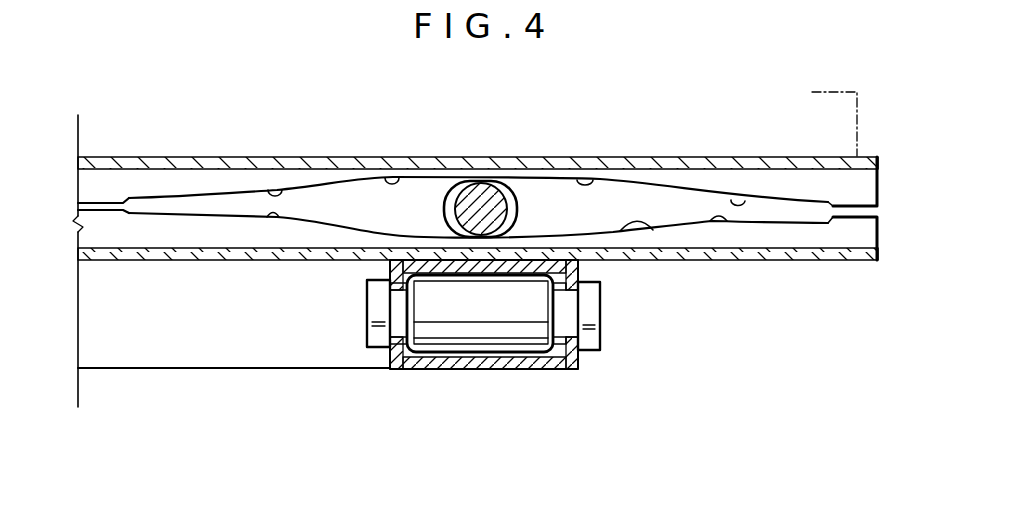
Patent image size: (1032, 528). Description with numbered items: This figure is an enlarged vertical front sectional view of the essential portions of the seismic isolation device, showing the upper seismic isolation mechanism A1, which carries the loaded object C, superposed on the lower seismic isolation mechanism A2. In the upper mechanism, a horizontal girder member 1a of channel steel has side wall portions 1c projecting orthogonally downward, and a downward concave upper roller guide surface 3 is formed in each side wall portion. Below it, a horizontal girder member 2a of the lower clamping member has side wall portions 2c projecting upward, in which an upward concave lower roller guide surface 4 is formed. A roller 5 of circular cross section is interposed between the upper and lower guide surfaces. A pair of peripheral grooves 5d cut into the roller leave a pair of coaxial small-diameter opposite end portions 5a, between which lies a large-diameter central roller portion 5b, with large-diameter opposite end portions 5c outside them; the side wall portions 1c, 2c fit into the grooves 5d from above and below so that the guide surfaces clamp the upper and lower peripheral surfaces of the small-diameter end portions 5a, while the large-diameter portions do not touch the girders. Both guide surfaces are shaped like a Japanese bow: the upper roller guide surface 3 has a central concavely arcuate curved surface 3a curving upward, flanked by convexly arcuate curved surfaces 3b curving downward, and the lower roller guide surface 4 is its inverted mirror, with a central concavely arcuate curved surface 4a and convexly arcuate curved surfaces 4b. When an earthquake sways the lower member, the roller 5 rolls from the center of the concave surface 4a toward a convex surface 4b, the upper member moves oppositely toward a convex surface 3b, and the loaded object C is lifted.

The horizontal girder member 1a is at (695, 160).
The side wall portion 1c is at (175, 182).
The horizontal girder member 2a is at (527, 371).
The side wall portion 2c is at (176, 236).
The upper roller guide surface 3 is at (388, 298).
The concavely arcuate curved surface 3a is at (392, 178).
The convexly arcuate curved surface 3b is at (276, 190).
The lower roller guide surface 4 is at (403, 366).
The concavely arcuate curved surface 4a is at (406, 231).
The convexly arcuate curved surface 4b is at (272, 222).
The roller 5 is at (529, 217).
The small-diameter opposite end portion 5a is at (476, 206).
The central roller portion 5b is at (525, 189).
The opposite end portion 5c is at (380, 344).
The peripheral groove 5d is at (388, 273).
The upper seismic isolation mechanism A1 is at (797, 155).
The lower seismic isolation mechanism A2 is at (232, 372).
The loaded object C is at (842, 133).